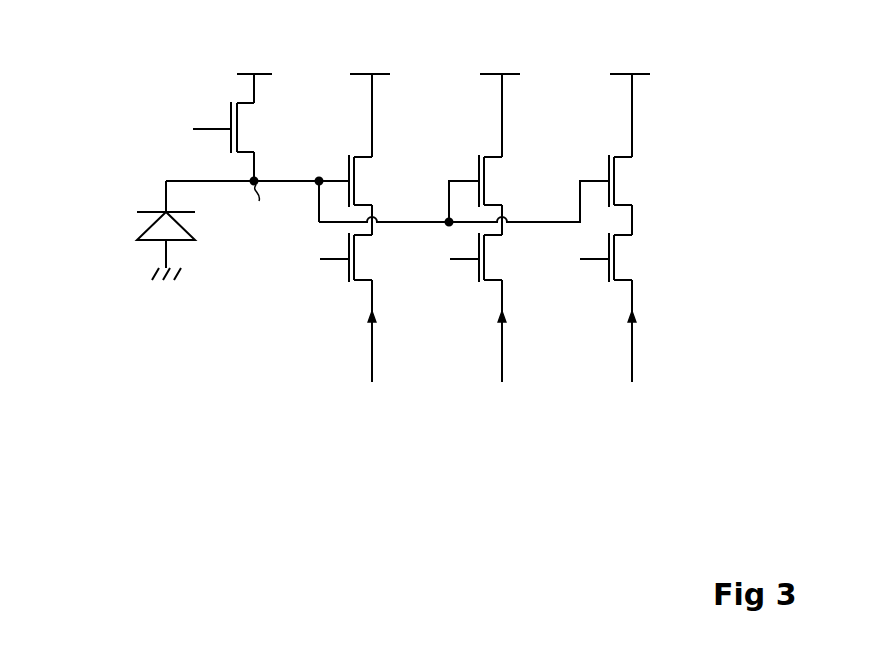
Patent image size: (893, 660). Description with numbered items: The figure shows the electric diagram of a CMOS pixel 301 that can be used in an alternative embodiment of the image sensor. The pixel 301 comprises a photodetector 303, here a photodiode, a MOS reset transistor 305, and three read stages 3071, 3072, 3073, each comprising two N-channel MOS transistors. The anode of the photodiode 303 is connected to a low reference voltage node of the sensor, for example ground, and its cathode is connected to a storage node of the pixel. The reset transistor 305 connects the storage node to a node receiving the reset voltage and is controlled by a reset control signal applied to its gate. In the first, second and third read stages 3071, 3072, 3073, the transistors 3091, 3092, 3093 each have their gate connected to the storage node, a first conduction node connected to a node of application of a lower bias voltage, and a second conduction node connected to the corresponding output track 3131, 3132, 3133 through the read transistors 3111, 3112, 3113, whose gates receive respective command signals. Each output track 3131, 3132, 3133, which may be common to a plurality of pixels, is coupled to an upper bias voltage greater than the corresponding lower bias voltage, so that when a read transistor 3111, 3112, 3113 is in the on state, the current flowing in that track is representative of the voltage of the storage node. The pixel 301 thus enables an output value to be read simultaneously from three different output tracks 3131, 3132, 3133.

The CMOS pixel 301 is at (107, 92).
The photodetector 303 is at (150, 226).
The MOS reset transistor 305 is at (238, 124).
The first read stage 3071 is at (371, 417).
The second read stage 3072 is at (501, 417).
The third read stage 3073 is at (631, 417).
The first MOS transistor 3091 is at (356, 172).
The second MOS transistor 3092 is at (486, 172).
The third MOS transistor 3093 is at (616, 172).
The first read transistor 3111 is at (348, 274).
The second read transistor 3112 is at (478, 274).
The third read transistor 3113 is at (608, 274).
The first output track 3131 is at (372, 352).
The second output track 3132 is at (502, 352).
The third output track 3133 is at (632, 352).